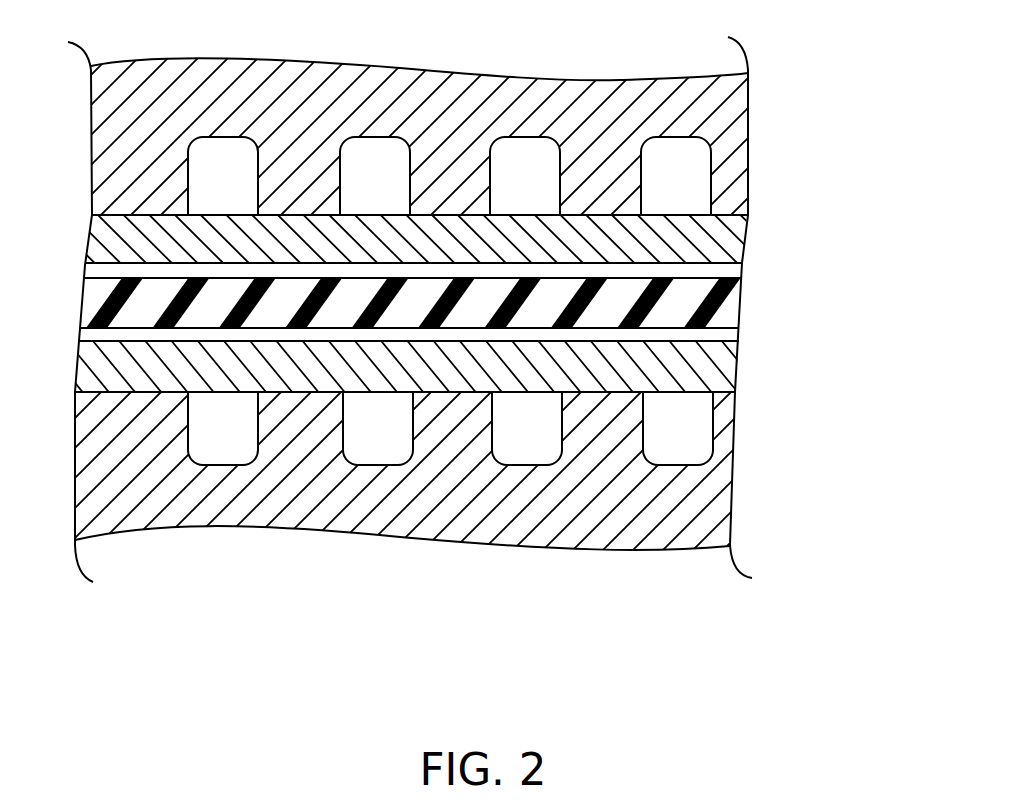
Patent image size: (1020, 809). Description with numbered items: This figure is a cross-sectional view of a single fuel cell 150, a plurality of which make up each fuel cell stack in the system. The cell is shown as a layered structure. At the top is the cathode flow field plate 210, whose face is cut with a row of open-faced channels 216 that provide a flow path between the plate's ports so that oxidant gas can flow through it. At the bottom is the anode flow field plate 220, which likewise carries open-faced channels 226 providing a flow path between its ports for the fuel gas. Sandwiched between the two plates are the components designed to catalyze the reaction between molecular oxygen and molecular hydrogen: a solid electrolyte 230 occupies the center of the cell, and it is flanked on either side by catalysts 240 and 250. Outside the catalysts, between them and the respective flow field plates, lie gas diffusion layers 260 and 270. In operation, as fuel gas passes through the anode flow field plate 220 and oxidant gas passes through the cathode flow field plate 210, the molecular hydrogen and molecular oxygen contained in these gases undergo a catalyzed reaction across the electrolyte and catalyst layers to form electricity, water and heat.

The fuel cell 150 is at (694, 609).
The cathode flow field plate 210 is at (452, 128).
The open-faced channels 216 is at (378, 131).
The anode flow field plate 220 is at (480, 480).
The open-faced channels 226 is at (375, 486).
The solid electrolyte 230 is at (720, 310).
The catalyst 240 is at (730, 328).
The catalyst 250 is at (743, 262).
The gas diffusion layer 260 is at (735, 383).
The gas diffusion layer 270 is at (723, 238).